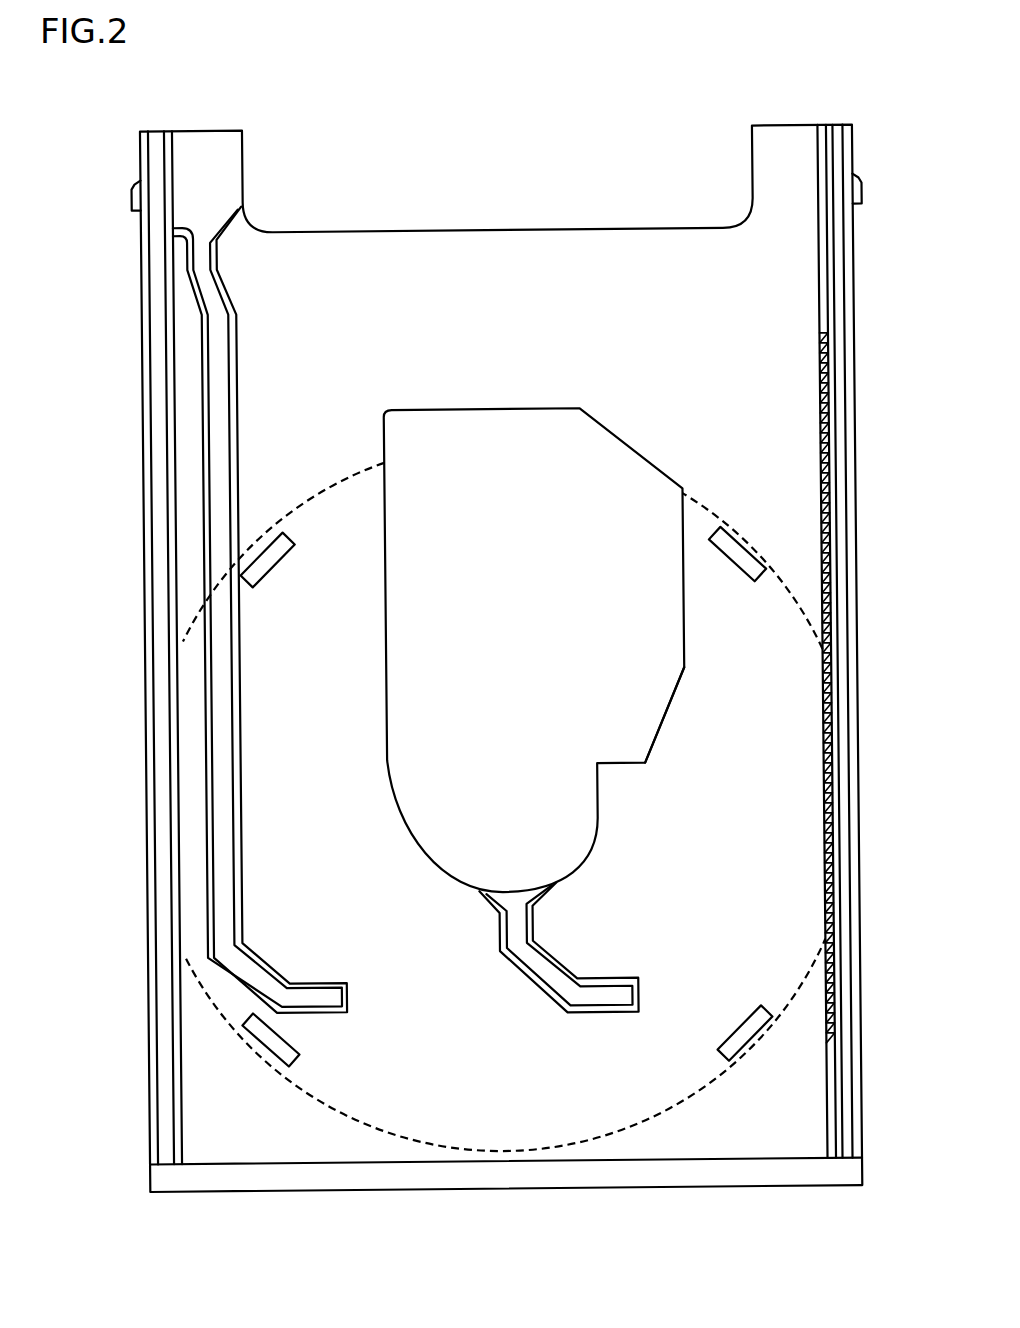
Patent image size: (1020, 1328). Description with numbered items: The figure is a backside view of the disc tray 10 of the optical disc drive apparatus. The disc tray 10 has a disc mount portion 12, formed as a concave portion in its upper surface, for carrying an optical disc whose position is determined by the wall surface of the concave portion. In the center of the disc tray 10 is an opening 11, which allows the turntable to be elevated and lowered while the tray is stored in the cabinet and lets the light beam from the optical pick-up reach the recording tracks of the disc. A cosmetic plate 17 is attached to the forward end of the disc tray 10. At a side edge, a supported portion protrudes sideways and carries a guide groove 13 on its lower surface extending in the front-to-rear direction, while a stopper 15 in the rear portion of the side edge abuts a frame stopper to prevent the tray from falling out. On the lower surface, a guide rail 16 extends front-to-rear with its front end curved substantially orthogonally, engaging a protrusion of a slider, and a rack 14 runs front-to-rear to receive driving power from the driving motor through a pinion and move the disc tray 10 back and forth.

The disc tray 10 is at (862, 261).
The opening 11 is at (542, 409).
The disc mount portion 12 is at (684, 750).
The guide groove 13 is at (160, 924).
The rack 14 is at (829, 978).
The stopper 15 is at (137, 195).
The guide rail 16 is at (324, 995).
The cosmetic plate 17 is at (550, 1190).